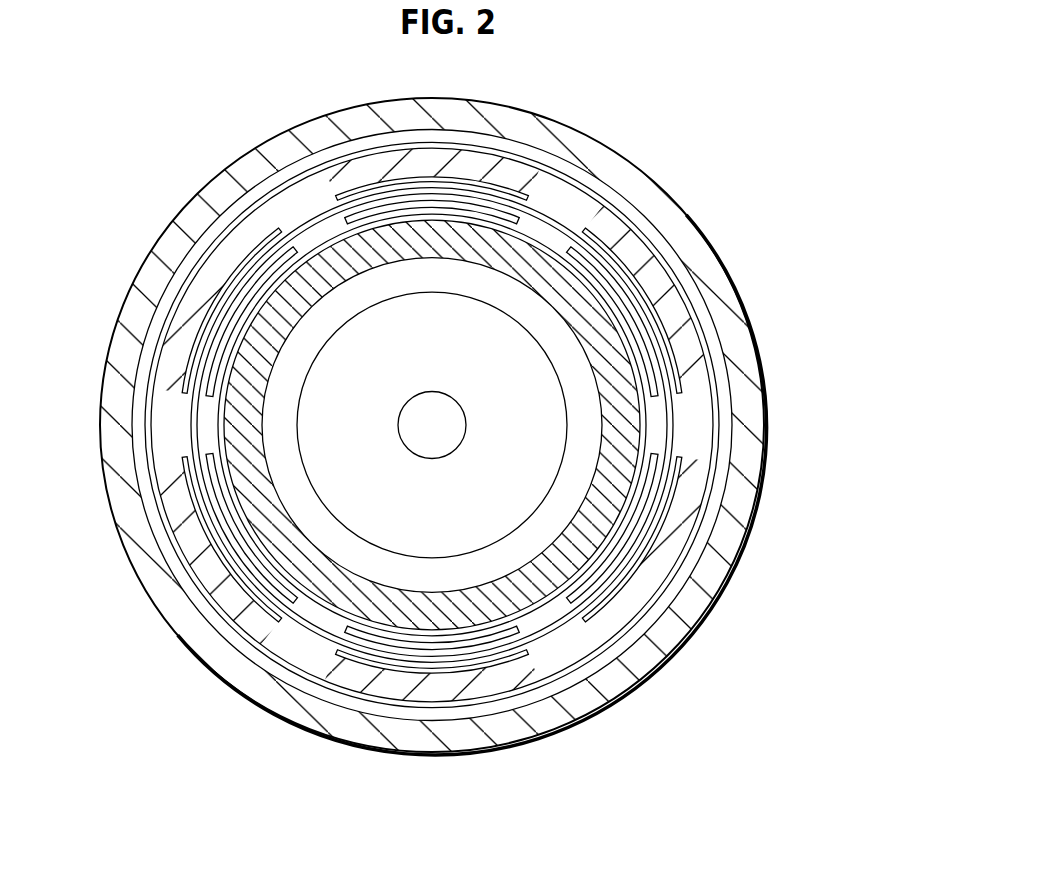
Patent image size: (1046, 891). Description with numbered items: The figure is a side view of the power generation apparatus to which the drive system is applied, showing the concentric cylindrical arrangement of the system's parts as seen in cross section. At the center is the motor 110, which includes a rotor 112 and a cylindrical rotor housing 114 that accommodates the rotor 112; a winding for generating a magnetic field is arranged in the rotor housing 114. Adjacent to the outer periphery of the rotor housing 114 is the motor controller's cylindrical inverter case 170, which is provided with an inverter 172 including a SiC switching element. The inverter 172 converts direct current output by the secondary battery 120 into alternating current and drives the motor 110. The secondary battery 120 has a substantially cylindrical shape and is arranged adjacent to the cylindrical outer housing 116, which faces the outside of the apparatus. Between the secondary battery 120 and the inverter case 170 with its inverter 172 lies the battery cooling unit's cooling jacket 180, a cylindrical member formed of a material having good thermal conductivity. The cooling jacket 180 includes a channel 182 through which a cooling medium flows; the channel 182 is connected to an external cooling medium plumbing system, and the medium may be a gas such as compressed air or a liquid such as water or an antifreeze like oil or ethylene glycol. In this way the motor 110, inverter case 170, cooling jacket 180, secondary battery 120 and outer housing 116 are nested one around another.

The motor 110 is at (538, 398).
The rotor 112 is at (510, 347).
The rotor housing 114 is at (533, 250).
The outer housing 116 is at (617, 160).
The secondary battery 120 is at (457, 712).
The inverter case 170 is at (312, 613).
The inverter 172 is at (247, 568).
The cooling jacket 180 is at (297, 205).
The channel 182 is at (247, 253).